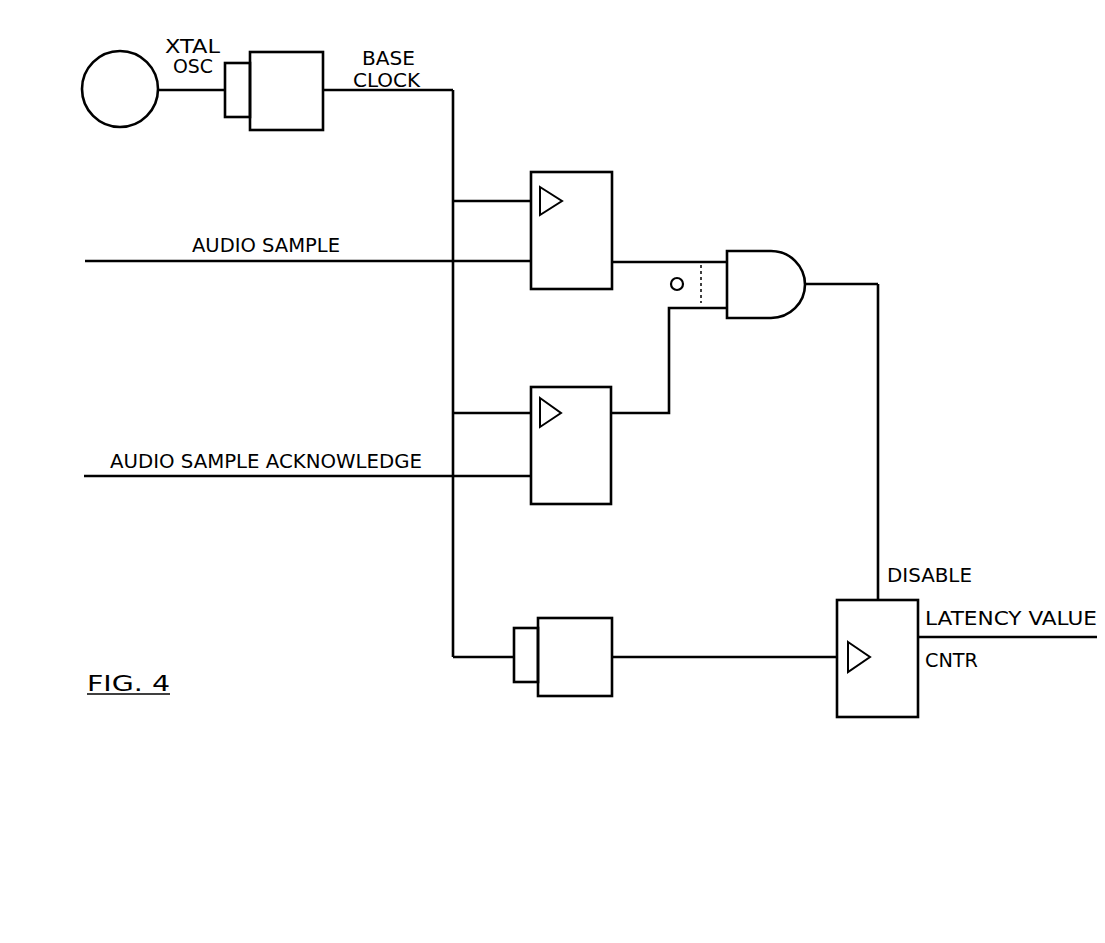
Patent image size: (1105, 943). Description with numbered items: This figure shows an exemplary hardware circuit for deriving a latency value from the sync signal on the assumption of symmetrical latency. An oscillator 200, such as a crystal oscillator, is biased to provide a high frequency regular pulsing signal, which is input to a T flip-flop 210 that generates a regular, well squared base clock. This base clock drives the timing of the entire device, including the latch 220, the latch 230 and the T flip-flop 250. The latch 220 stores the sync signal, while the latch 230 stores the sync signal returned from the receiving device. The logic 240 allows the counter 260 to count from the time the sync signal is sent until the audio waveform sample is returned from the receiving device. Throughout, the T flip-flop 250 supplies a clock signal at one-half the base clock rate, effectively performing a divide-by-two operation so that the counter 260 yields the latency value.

The oscillator 200 is at (137, 128).
The T flip-flop 210 is at (303, 130).
The latch 220 is at (589, 290).
The latch 230 is at (588, 504).
The logic 240 is at (758, 320).
The T flip-flop 250 is at (592, 696).
The counter 260 is at (898, 718).